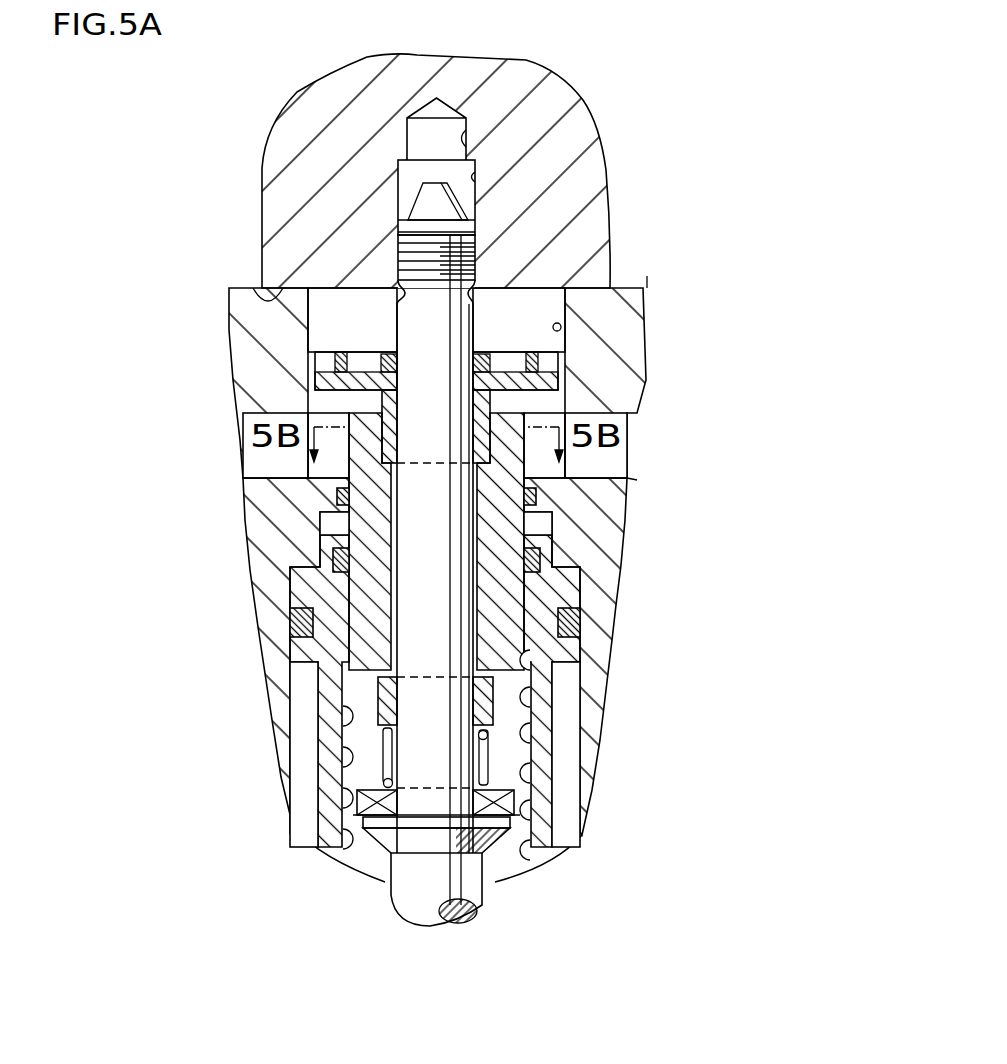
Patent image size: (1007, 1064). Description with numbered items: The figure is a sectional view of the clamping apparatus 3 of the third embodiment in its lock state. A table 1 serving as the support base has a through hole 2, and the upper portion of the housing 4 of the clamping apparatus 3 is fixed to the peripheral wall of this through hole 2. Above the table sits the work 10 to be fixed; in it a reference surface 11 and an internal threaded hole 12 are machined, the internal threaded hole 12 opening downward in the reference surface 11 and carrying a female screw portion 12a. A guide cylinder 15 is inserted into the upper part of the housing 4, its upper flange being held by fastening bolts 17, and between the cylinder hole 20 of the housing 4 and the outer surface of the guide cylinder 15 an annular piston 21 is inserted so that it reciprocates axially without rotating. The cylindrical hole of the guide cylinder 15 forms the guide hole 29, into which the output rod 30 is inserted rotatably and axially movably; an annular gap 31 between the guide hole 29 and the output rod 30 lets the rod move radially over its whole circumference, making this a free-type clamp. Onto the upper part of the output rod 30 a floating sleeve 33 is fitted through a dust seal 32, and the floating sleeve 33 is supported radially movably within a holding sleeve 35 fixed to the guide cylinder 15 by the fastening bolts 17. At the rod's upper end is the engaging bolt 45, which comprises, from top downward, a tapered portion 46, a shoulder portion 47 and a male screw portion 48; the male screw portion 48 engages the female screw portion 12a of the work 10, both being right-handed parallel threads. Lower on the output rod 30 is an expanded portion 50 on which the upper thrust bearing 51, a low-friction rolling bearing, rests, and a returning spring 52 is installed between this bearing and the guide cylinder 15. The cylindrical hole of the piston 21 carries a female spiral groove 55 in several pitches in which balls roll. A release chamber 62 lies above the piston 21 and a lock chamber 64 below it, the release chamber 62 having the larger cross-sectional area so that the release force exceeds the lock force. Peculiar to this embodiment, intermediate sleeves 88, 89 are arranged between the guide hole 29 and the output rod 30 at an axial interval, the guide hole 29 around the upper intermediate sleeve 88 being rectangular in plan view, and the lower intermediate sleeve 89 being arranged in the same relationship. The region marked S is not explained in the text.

The table 1 is at (623, 377).
The through hole 2 is at (561, 330).
The clamping apparatus 3 is at (660, 506).
The housing 4 is at (616, 567).
The work 10 is at (600, 138).
The reference surface 11 is at (268, 300).
The internal threaded hole 12 is at (460, 145).
The female screw portion 12a is at (463, 180).
The guide cylinder 15 is at (510, 473).
The fastening bolts 17 is at (331, 352).
The cylinder hole 20 is at (297, 741).
The annular piston 21 is at (276, 648).
The guide hole 29 is at (401, 552).
The output rod 30 is at (484, 578).
The annular gap 31 is at (388, 524).
The dust seal 32 is at (396, 360).
The floating sleeve 33 is at (397, 383).
The holding sleeve 35 is at (354, 363).
The engaging bolt 45 is at (477, 258).
The tapered portion 46 is at (418, 190).
The shoulder portion 47 is at (400, 232).
The male screw portion 48 is at (398, 257).
The expanded portion 50 is at (437, 820).
The upper thrust bearing 51 is at (507, 803).
The returning spring 52 is at (477, 737).
The female spiral groove 55 is at (327, 851).
The release chamber 62 is at (290, 571).
The lock chamber 64 is at (303, 692).
The upper intermediate sleeve 88 is at (394, 427).
The lower intermediate sleeve 89 is at (397, 705).
The space S is at (647, 276).